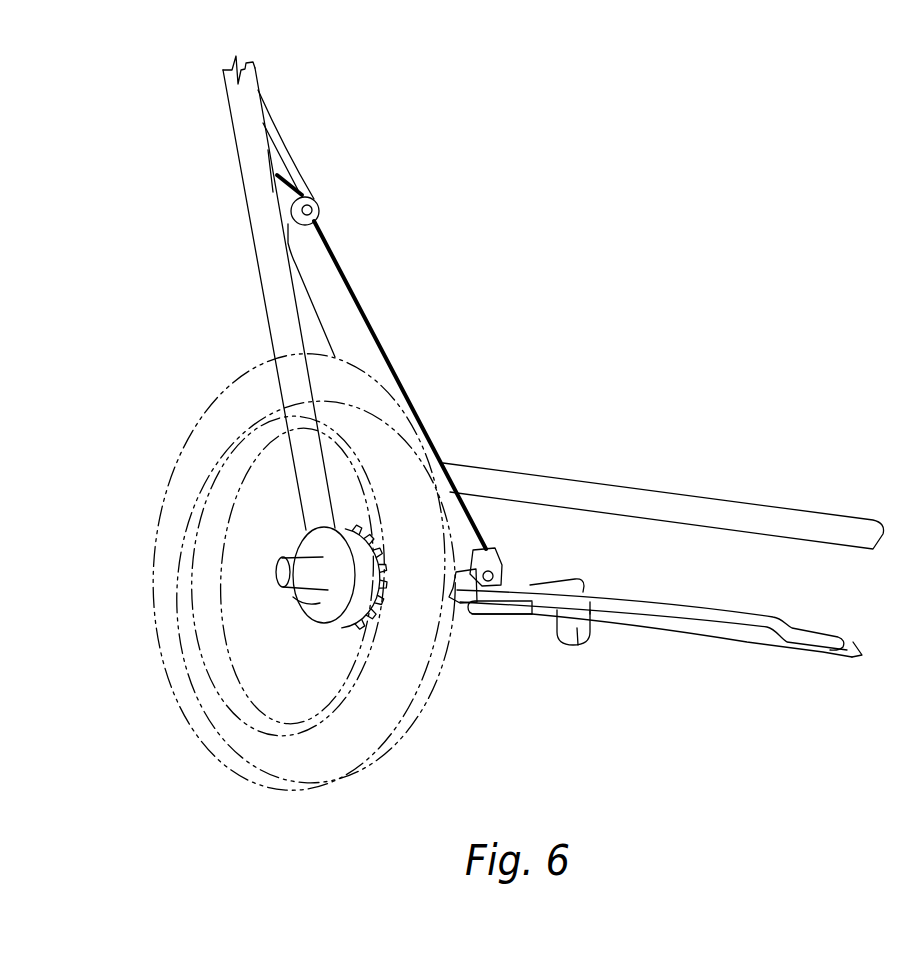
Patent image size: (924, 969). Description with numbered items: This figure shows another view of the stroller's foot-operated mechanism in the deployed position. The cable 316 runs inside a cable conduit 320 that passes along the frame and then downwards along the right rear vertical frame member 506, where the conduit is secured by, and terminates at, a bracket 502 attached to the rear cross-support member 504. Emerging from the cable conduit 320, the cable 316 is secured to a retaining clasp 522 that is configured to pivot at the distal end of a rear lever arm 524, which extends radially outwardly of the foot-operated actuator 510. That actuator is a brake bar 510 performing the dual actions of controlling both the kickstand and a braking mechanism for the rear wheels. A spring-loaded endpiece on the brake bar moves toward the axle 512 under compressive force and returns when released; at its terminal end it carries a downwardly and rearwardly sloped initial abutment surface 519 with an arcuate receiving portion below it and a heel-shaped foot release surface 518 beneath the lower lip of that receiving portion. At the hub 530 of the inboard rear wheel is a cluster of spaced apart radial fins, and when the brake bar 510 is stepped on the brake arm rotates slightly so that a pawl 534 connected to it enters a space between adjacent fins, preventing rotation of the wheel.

The cable 316 is at (350, 283).
The cable conduit 320 is at (287, 140).
The bracket 502 is at (290, 197).
The rear cross-support member 504 is at (747, 512).
The right rear vertical frame member 506 is at (267, 305).
The foot-operated actuator 510 is at (662, 610).
The axle 512 is at (748, 645).
The foot release surface 518 is at (578, 632).
The initial abutment surface 519 is at (587, 578).
The retaining clasp 522 is at (498, 550).
The rear lever arm 524 is at (465, 602).
The hub 530 is at (323, 603).
The pawl 534 is at (382, 607).